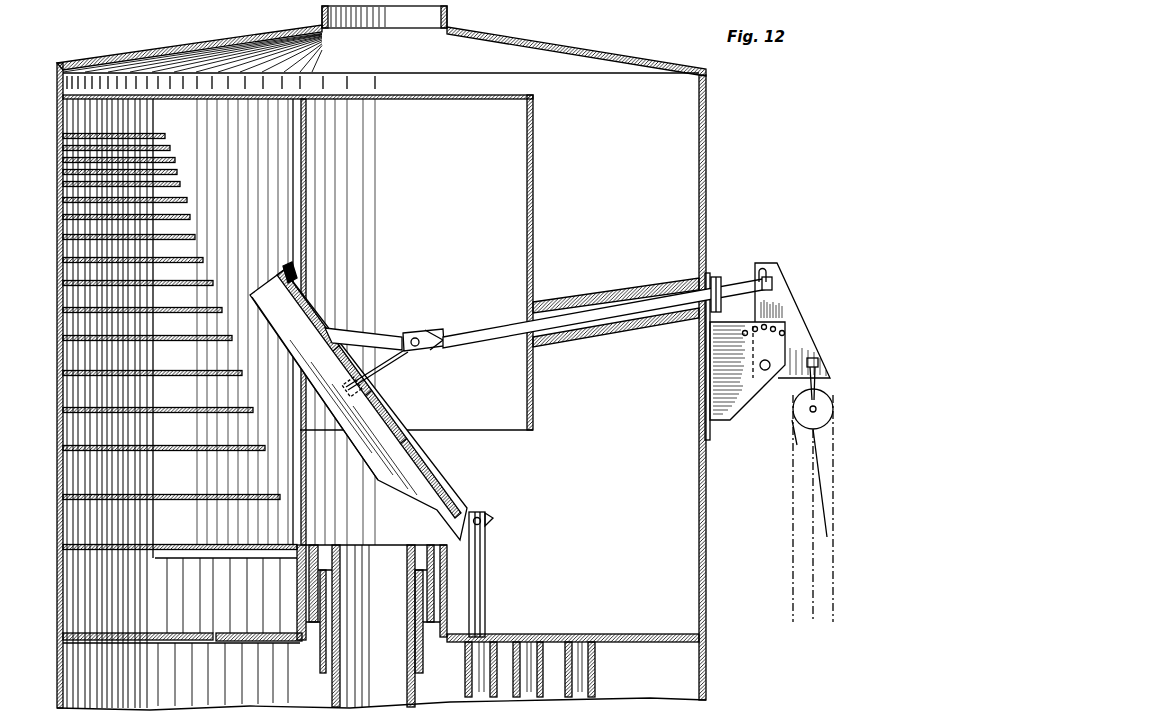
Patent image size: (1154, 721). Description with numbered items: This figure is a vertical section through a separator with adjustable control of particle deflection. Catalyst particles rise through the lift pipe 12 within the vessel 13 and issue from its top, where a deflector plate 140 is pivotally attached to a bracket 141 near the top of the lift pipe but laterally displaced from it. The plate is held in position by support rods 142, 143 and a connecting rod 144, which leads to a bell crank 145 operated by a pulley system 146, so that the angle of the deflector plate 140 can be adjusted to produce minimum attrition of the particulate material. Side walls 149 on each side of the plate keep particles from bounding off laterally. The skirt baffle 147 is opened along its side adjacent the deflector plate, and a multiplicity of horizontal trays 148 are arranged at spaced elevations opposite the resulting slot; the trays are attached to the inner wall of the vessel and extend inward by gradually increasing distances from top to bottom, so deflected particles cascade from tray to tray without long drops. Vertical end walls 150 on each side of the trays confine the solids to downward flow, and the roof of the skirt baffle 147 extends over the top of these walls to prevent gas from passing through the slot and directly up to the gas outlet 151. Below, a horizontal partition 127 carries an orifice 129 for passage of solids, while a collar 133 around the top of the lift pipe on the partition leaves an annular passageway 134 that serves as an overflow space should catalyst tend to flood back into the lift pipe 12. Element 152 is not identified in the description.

The lift pipe 12 is at (415, 692).
The vessel 13 is at (49, 212).
The horizontal partition 127 is at (682, 633).
The orifice 129 is at (195, 644).
The collar 133 is at (297, 605).
The annular passageway 134 is at (310, 543).
The deflector plate 140 is at (292, 283).
The bracket 141 is at (481, 598).
The support rod 142 is at (367, 330).
The support rod 143 is at (392, 373).
The connecting rod 144 is at (483, 327).
The bell crank 145 is at (788, 320).
The pulley system 146 is at (820, 503).
The skirt baffle 147 is at (522, 97).
The horizontal trays 148 is at (193, 232).
The side walls 149 is at (250, 322).
The vertical end walls 150 is at (233, 534).
The gas outlet 151 is at (447, 14).
The channels 152 is at (566, 652).